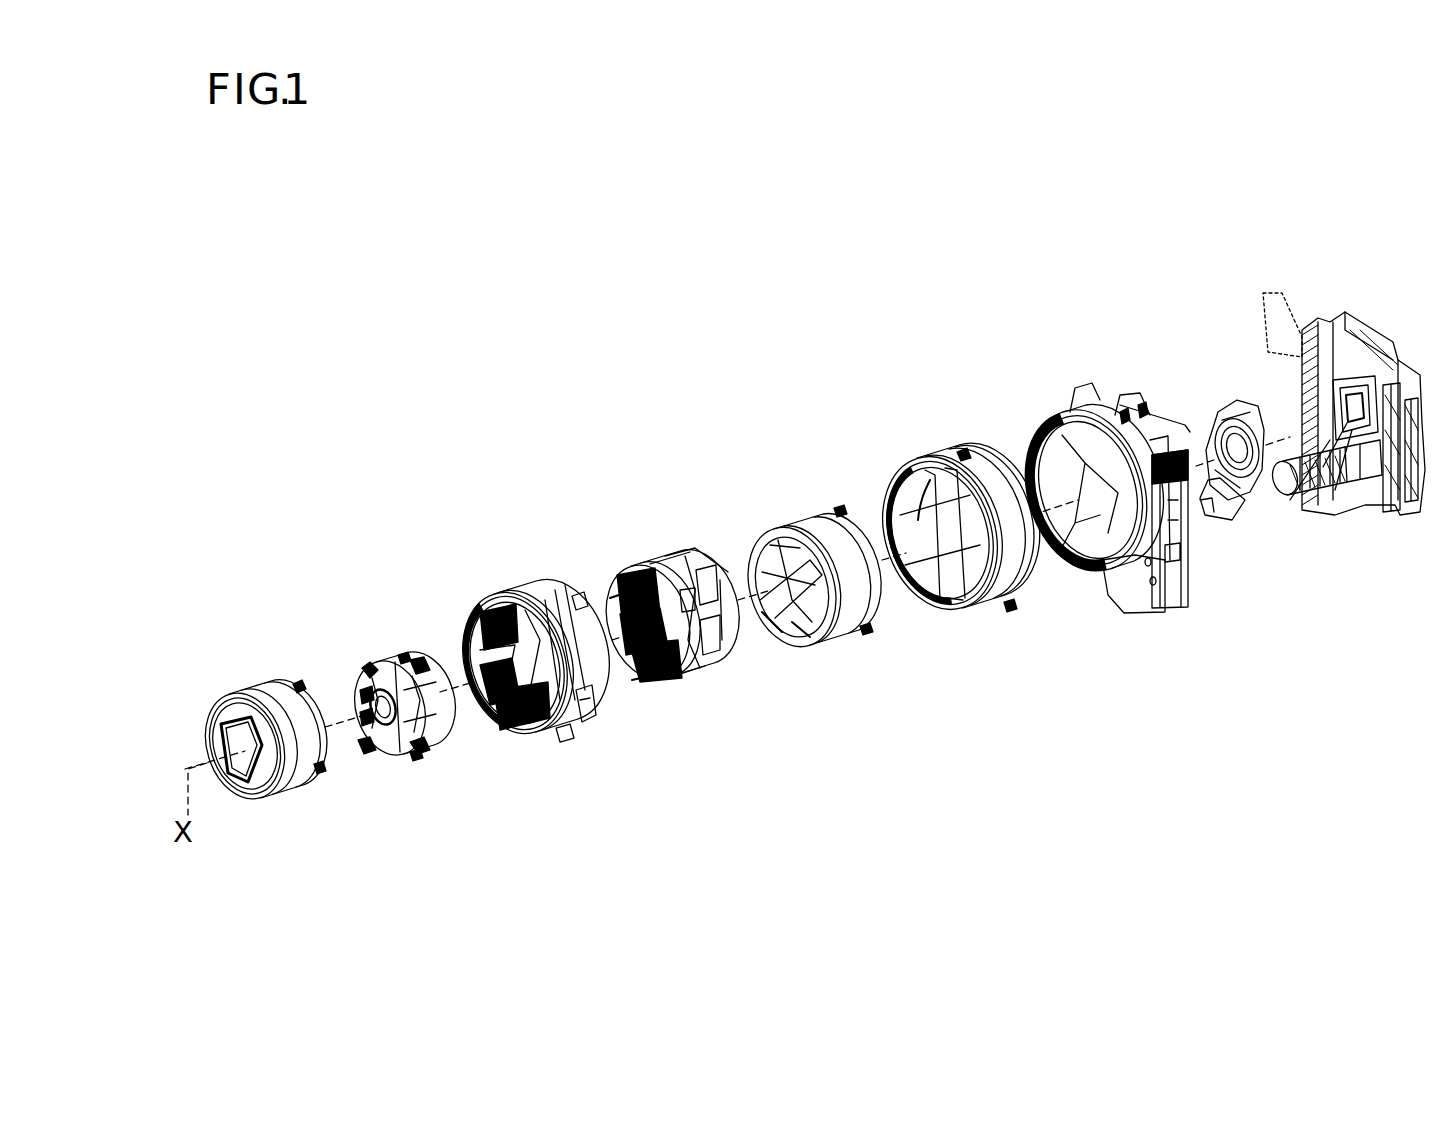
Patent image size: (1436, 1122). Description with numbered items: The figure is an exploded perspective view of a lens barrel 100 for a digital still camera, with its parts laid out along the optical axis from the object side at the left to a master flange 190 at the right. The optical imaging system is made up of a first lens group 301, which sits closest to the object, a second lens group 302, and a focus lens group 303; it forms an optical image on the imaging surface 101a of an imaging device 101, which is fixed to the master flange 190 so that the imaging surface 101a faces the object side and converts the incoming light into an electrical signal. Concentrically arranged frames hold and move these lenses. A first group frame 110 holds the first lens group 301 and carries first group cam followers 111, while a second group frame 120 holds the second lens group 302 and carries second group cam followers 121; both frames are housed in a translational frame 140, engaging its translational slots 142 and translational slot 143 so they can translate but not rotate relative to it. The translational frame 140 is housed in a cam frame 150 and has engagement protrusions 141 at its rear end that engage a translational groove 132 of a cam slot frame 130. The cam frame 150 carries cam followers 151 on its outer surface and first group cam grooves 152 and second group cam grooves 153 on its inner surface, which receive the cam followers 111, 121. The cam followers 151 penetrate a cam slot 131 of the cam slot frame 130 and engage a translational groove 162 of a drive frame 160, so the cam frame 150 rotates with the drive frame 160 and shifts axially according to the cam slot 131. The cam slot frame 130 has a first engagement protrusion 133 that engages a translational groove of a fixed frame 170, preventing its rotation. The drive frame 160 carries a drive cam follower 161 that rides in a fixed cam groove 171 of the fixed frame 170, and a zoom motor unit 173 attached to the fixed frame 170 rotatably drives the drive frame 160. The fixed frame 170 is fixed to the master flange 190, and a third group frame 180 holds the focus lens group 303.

The lens barrel 100 is at (823, 318).
The first group frame 110 is at (267, 725).
The first group cam followers 111 is at (299, 684).
The second group frame 120 is at (400, 697).
The second group cam followers 121 is at (405, 653).
The cam slot frame 130 is at (541, 671).
The cam slot 131 is at (592, 704).
The translational groove 132 is at (493, 712).
The first engagement protrusion 133 is at (580, 598).
The translational frame 140 is at (659, 607).
The engagement protrusions 141 is at (680, 558).
The translational slots 142 is at (658, 684).
The translational slot 143 is at (625, 588).
The cam frame 150 is at (820, 583).
The cam followers 151 is at (840, 507).
The first group cam grooves 152 is at (806, 640).
The second group cam grooves 153 is at (782, 632).
The drive frame 160 is at (952, 512).
The drive cam follower 161 is at (964, 450).
The translational groove 162 is at (918, 530).
The fixed frame 170 is at (1091, 492).
The fixed cam groove 171 is at (1058, 472).
The zoom motor unit 173 is at (1136, 606).
The third group frame 180 is at (1231, 445).
The master flange 190 is at (1327, 402).
The imaging device 101 is at (1309, 456).
The imaging surface 101a is at (1352, 406).
The first lens group 301 is at (245, 748).
The second lens group 302 is at (385, 724).
The focus lens group 303 is at (1237, 465).